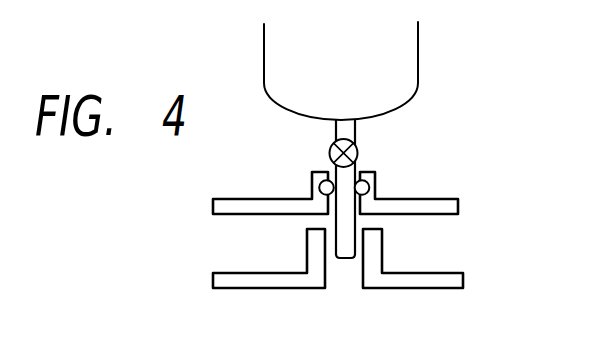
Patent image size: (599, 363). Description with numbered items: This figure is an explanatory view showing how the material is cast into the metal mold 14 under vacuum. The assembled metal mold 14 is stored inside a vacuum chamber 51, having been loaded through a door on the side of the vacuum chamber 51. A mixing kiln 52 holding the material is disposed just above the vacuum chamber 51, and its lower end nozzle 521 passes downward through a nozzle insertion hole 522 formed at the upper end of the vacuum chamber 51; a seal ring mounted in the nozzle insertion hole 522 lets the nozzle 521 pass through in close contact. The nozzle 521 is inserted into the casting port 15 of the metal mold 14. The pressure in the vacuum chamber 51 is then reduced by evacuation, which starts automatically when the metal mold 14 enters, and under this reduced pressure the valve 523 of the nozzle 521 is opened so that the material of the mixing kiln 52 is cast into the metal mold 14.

The mixing kiln 52 is at (407, 57).
The lower end nozzle 521 is at (348, 249).
The nozzle insertion hole 522 is at (360, 173).
The valve 523 is at (329, 150).
The vacuum chamber 51 is at (447, 198).
The casting port 15 is at (327, 263).
The metal mold 14 is at (434, 279).